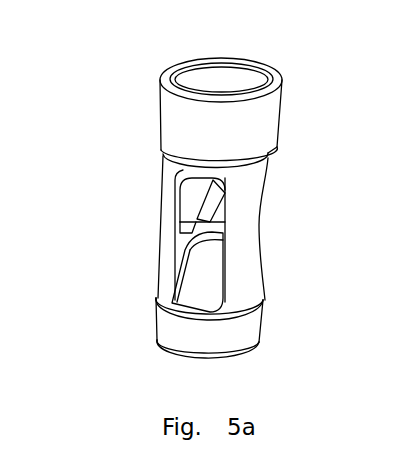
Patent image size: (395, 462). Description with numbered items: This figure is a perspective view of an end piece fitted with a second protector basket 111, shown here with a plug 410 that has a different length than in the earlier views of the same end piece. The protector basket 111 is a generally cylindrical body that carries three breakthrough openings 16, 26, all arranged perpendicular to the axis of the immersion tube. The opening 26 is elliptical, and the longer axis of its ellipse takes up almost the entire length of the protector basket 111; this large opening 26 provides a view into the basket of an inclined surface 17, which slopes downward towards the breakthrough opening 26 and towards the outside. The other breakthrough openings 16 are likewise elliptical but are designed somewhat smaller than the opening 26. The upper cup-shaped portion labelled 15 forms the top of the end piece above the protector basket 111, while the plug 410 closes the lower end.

The cup / upper receptacle 15 is at (190, 122).
The breakthrough opening 16 is at (197, 197).
The breakthrough opening 26 is at (177, 230).
The inclined surface 17 is at (202, 286).
The plug 410 is at (168, 327).
The protector basket 111 is at (273, 230).